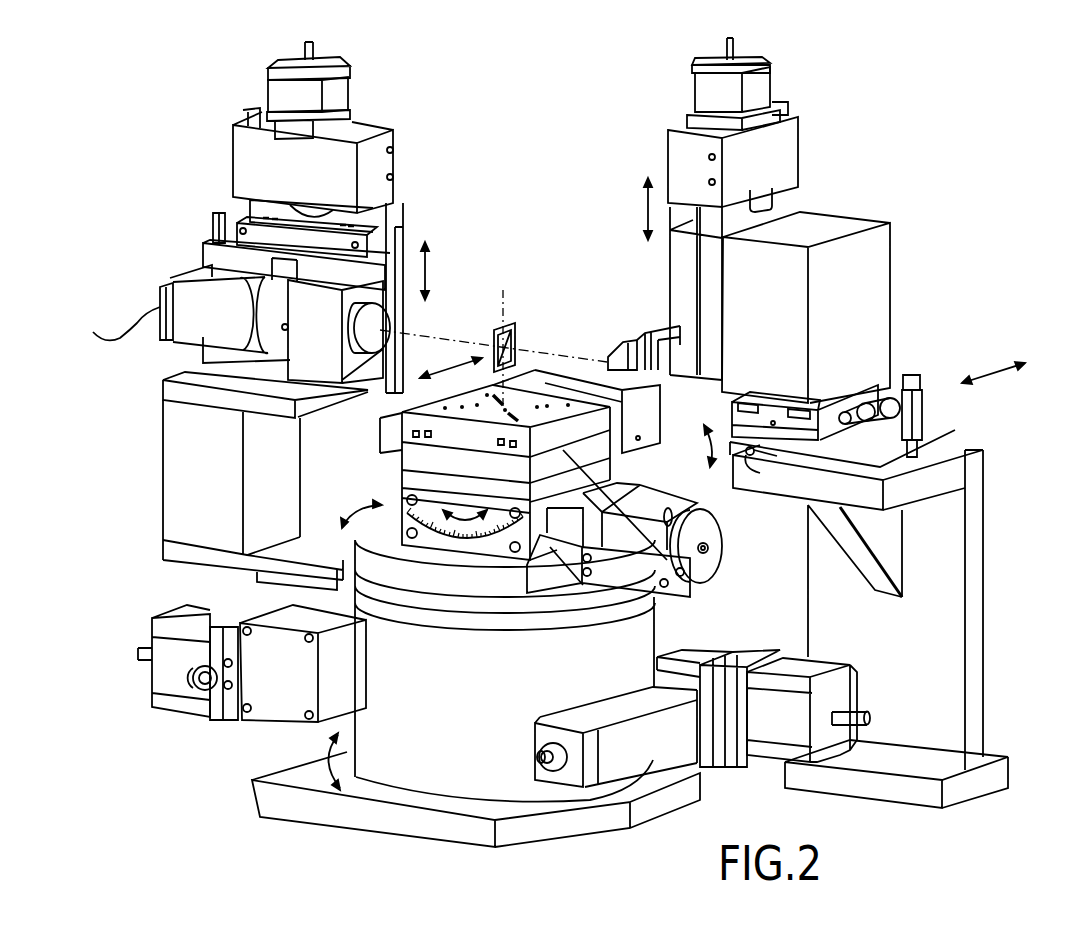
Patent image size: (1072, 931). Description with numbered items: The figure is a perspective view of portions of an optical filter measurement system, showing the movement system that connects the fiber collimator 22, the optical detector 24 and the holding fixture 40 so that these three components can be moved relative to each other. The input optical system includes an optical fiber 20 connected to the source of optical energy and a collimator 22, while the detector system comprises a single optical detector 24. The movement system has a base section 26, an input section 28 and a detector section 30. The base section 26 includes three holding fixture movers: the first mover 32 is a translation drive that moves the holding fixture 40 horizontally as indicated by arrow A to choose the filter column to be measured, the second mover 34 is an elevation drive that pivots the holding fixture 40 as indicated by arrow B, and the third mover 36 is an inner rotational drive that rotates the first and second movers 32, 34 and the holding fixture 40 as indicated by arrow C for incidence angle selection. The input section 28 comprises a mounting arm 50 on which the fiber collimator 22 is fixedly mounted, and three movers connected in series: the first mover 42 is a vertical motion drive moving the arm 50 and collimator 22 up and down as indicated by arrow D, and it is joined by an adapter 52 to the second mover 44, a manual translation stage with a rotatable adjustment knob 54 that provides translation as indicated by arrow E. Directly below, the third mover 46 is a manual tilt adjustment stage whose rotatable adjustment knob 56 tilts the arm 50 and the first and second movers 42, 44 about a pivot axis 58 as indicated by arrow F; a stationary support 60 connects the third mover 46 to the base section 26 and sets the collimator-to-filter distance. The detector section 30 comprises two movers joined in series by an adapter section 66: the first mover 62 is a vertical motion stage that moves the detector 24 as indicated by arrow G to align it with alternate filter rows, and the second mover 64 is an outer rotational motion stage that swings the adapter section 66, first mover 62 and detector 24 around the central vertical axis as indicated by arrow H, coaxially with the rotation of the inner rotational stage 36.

The optical fiber 20 is at (772, 372).
The collimator 22 is at (606, 362).
The optical detector 24 is at (222, 322).
The base section 26 is at (250, 800).
The input section 28 is at (990, 563).
The detector section 30 is at (160, 442).
The first mover 32 is at (712, 565).
The second mover 34 is at (652, 607).
The third mover 36 is at (148, 677).
The holding fixture 40 is at (513, 325).
The first mover 42 is at (778, 145).
The second mover 44 is at (870, 390).
The third mover 46 is at (923, 467).
The mounting arm 50 is at (657, 323).
The adapter 52 is at (853, 277).
The rotatable adjustment knob 54 is at (893, 388).
The rotatable adjustment knob 56 is at (923, 412).
The pivot axis 58 is at (746, 455).
The stationary support 60 is at (985, 640).
The first mover 62 is at (253, 172).
The second mover 64 is at (738, 767).
The adapter section 66 is at (162, 530).
The arrow A is at (463, 367).
The arrow B is at (463, 513).
The arrow C is at (345, 752).
The arrow D is at (644, 200).
The arrow E is at (985, 367).
The arrow F is at (702, 427).
The arrow G is at (426, 268).
The arrow H is at (346, 510).